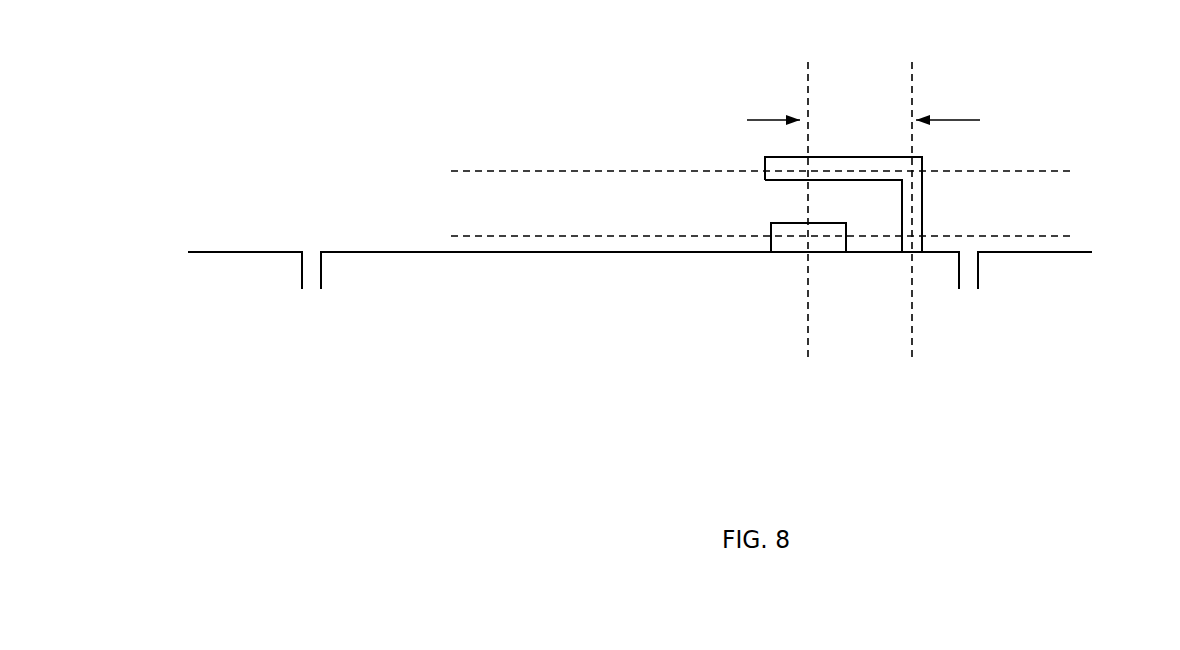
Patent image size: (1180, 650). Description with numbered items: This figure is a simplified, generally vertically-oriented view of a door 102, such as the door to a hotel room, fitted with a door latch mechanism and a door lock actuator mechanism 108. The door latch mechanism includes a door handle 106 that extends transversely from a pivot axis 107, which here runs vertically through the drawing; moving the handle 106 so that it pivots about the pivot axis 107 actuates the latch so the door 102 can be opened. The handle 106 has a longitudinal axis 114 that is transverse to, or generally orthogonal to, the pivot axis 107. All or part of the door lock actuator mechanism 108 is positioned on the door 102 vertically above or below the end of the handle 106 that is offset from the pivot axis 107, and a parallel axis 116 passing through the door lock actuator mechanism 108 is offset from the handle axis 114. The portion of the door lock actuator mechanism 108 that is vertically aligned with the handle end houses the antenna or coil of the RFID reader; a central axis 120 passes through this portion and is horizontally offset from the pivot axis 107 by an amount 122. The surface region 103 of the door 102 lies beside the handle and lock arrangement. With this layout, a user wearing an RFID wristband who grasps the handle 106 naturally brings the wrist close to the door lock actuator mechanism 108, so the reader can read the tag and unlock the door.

The door 102 is at (499, 268).
The substrate surface region 103 is at (1048, 263).
The door handle 106 is at (778, 157).
The pivot axis 107 is at (915, 67).
The door lock actuator mechanism 108 is at (790, 215).
The longitudinal axis 114 is at (1062, 170).
The parallel axis 116 is at (1059, 229).
The central axis 120 is at (798, 78).
The horizontal offset amount 122 is at (863, 121).